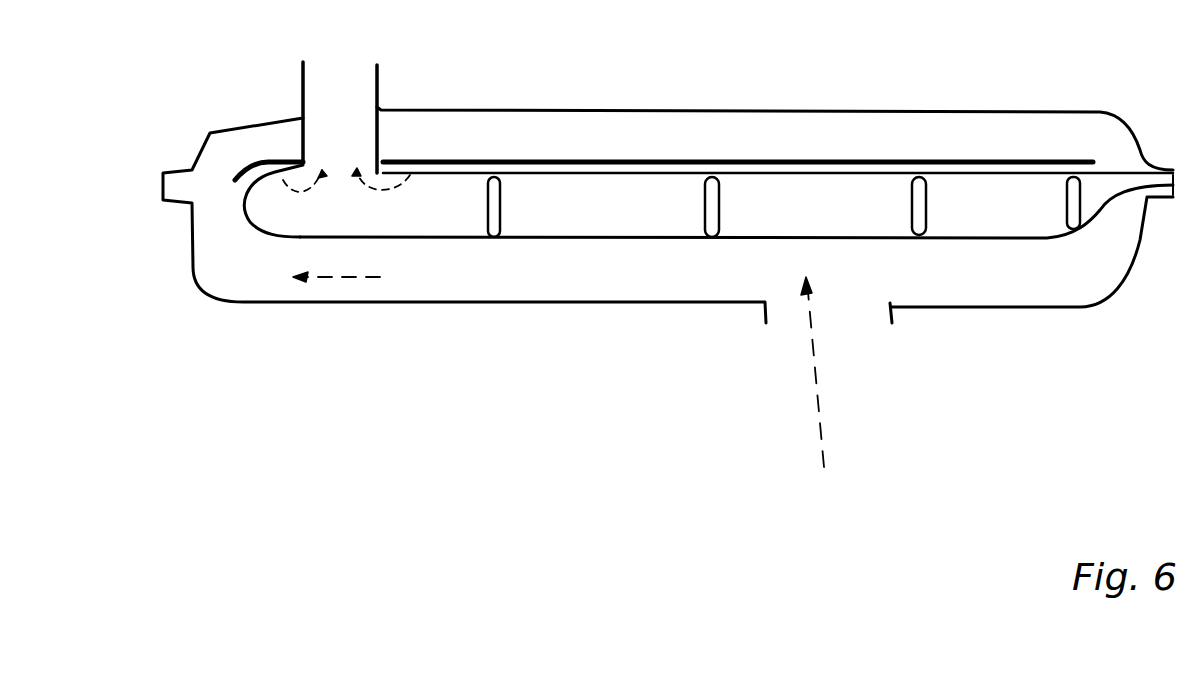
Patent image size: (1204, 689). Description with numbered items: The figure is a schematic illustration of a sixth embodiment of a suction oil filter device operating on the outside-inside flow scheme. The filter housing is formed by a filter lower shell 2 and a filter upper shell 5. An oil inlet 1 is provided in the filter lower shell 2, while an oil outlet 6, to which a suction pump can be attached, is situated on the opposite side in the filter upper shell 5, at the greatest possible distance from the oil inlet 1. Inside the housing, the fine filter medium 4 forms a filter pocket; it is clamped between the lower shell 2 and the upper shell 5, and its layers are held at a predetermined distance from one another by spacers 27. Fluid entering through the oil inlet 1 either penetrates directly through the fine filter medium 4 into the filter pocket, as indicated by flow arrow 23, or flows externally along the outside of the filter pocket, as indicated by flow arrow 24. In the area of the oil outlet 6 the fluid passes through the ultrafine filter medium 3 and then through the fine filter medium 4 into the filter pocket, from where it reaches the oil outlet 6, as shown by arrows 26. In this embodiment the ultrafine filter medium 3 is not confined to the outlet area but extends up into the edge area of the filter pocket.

The oil inlet 1 is at (925, 358).
The filter lower shell 2 is at (1053, 310).
The ultrafine filter medium 3 is at (248, 178).
The fine filter medium 4 is at (637, 176).
The filter upper shell 5 is at (1012, 108).
The oil outlet 6 is at (378, 75).
The flow arrow 23 is at (823, 422).
The flow arrow 24 is at (347, 277).
The arrows 26 is at (432, 152).
The spacers 27 is at (483, 232).